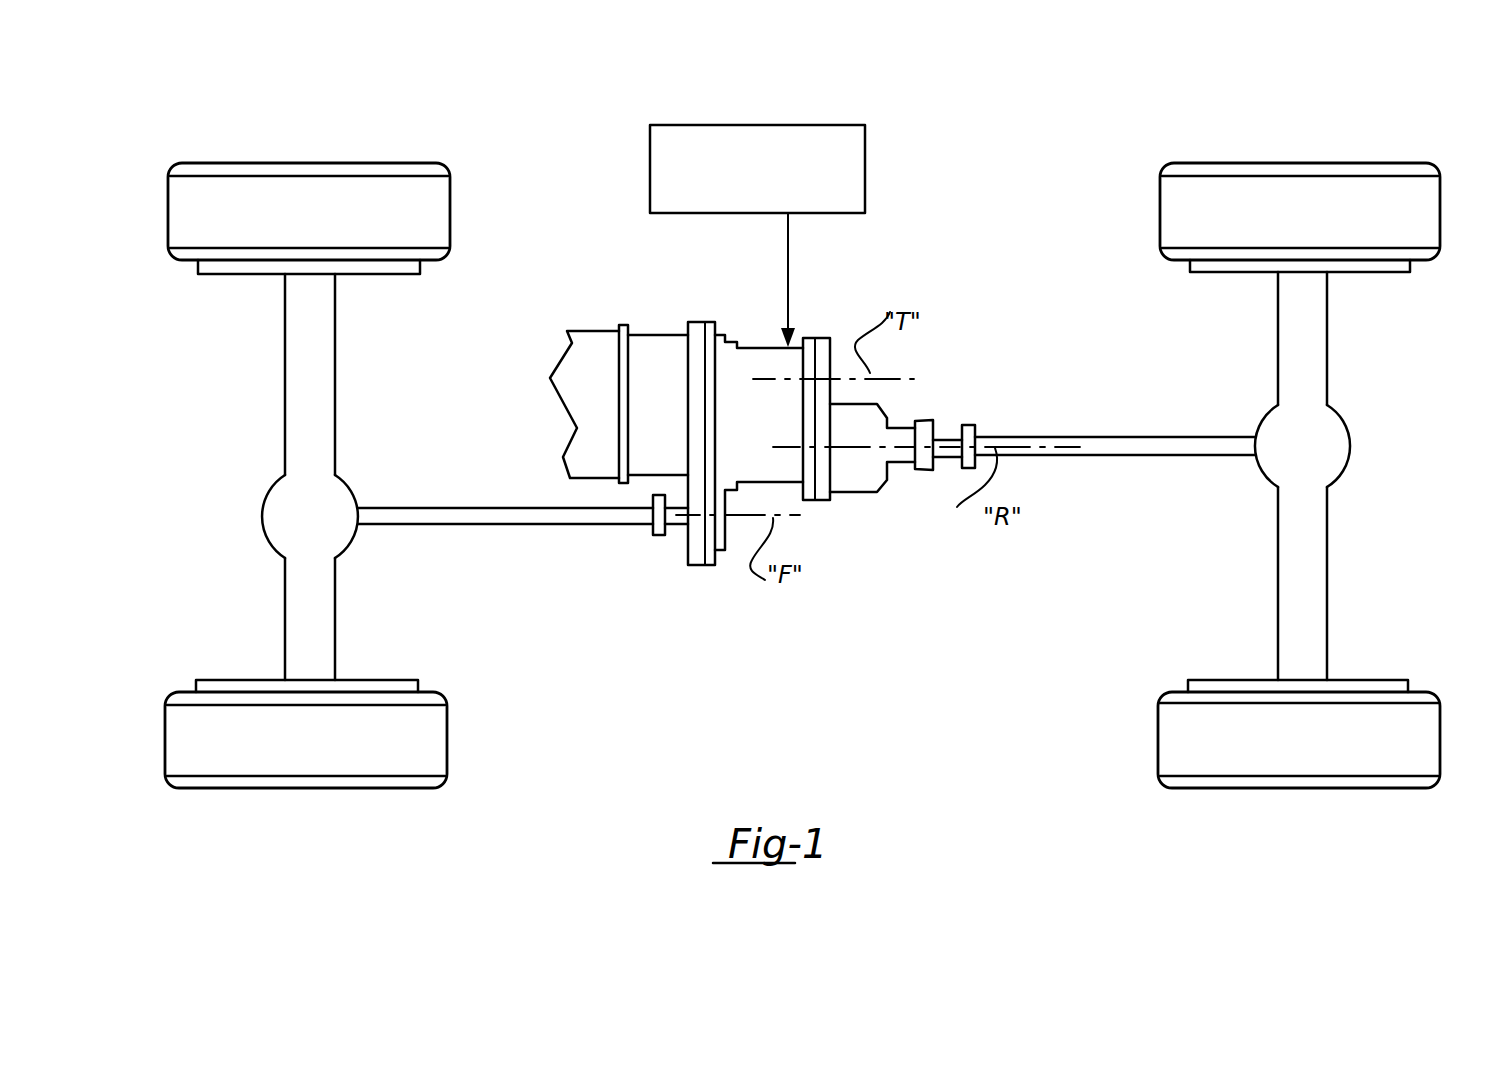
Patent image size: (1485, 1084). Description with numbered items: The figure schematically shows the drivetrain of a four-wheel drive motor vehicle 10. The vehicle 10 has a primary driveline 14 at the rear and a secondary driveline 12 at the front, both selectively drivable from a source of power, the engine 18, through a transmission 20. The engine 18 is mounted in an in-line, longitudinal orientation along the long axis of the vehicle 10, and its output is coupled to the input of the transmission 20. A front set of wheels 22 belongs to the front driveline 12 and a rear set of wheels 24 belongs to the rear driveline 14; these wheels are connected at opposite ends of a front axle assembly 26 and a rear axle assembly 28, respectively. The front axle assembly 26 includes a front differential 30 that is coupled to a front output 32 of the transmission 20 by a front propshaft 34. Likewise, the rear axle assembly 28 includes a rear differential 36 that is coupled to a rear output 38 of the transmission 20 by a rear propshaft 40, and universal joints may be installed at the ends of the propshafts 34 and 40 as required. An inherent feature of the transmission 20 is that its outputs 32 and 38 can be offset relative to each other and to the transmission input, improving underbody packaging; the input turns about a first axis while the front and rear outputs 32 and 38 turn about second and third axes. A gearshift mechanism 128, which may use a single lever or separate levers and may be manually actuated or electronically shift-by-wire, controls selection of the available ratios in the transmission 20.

The motor vehicle 10 is at (998, 160).
The secondary driveline 12 is at (350, 392).
The primary driveline 14 is at (1152, 385).
The engine 18 is at (577, 440).
The transmission 20 is at (660, 342).
The front set of wheels 22 is at (228, 198).
The rear set of wheels 24 is at (1217, 200).
The front axle assembly 26 is at (282, 370).
The rear axle assembly 28 is at (1318, 334).
The front differential 30 is at (272, 528).
The front output 32 is at (673, 522).
The front propshaft 34 is at (531, 517).
The rear differential 36 is at (1333, 434).
The rear output 38 is at (942, 440).
The rear propshaft 40 is at (1165, 447).
The gearshift mechanism 128 is at (866, 126).